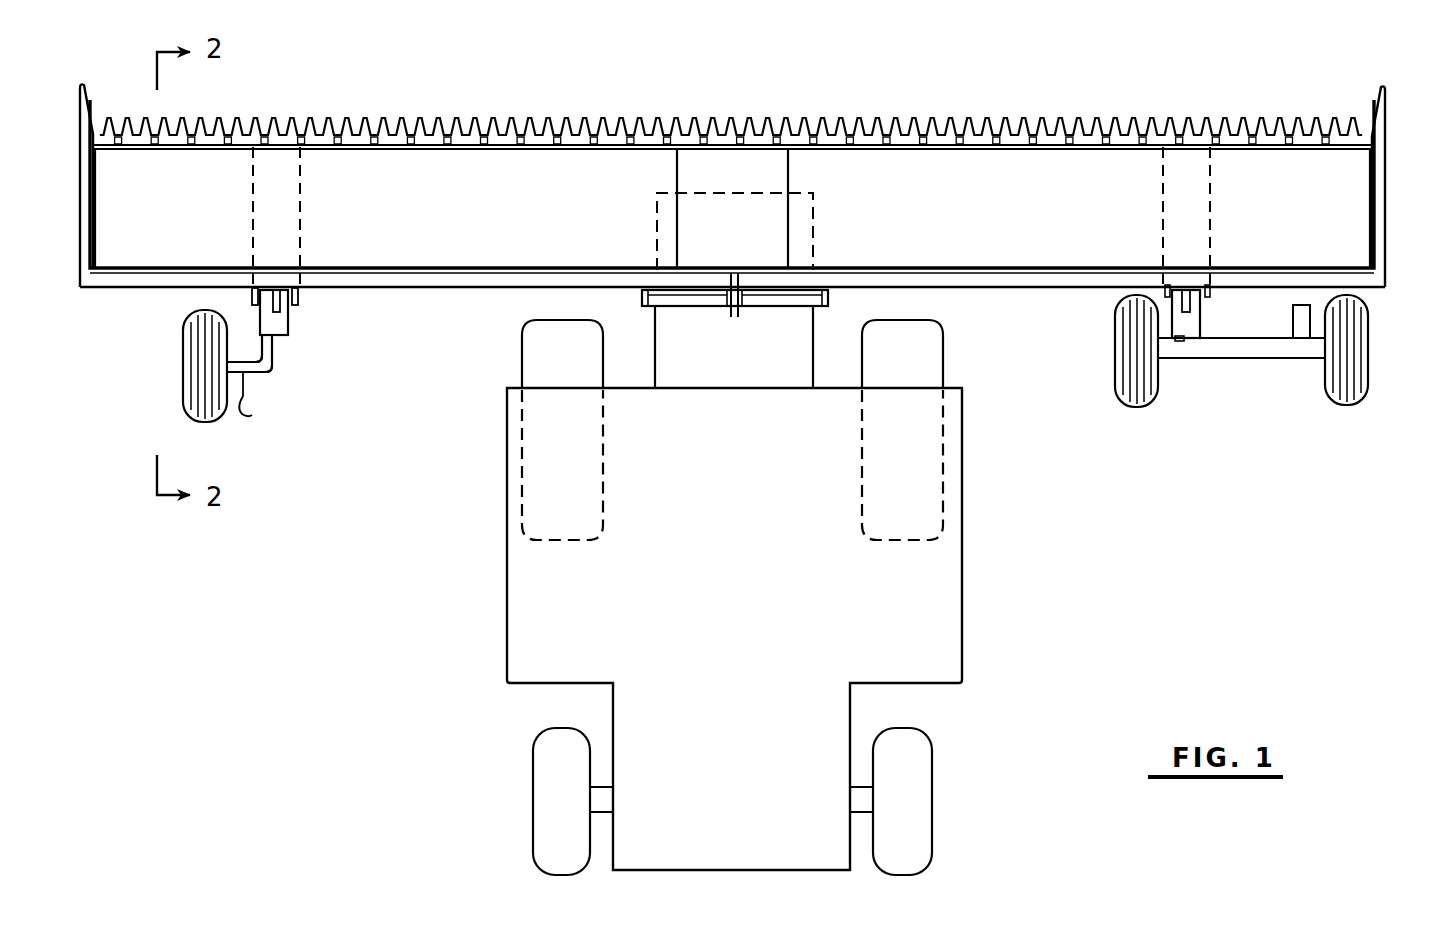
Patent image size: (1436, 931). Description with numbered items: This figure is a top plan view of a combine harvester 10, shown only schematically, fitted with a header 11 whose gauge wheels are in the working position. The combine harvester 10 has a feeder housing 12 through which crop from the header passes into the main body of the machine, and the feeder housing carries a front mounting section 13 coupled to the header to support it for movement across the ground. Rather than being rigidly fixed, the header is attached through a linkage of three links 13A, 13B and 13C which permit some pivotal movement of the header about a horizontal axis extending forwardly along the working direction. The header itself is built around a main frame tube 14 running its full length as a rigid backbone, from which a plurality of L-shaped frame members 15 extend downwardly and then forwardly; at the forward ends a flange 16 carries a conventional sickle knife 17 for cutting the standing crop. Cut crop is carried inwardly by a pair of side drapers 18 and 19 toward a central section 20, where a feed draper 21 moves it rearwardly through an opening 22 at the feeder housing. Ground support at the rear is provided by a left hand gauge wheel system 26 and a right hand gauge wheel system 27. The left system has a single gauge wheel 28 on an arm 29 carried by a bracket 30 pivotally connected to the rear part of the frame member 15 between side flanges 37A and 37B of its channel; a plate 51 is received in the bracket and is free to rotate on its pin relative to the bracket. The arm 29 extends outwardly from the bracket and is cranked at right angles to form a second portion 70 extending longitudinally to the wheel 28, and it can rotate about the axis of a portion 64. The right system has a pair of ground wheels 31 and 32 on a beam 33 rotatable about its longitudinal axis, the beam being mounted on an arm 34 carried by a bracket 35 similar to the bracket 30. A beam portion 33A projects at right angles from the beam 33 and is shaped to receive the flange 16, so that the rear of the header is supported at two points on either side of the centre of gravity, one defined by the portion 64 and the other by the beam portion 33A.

The combine harvester 10 is at (997, 598).
The header 11 is at (979, 88).
The feeder housing 12 is at (716, 368).
The front mounting section 13 is at (697, 318).
The link 13A is at (640, 297).
The link 13B is at (739, 320).
The link 13C is at (830, 297).
The main frame tube 14 is at (475, 291).
The L-shaped frame member 15 is at (262, 203).
The flange 16 is at (424, 140).
The sickle knife 17 is at (333, 116).
The side draper 18 is at (514, 167).
The side draper 19 is at (1006, 175).
The central section 20 is at (741, 172).
The feed draper 21 is at (771, 219).
The opening 22 is at (731, 270).
The left hand gauge wheel system 26 is at (254, 384).
The right hand gauge wheel system 27 is at (1211, 376).
The gauge wheel 28 is at (200, 352).
The arm 29 is at (273, 380).
The bracket 30 is at (289, 338).
The ground wheel 31 is at (1135, 320).
The ground wheel 32 is at (1348, 406).
The beam 33 is at (1270, 359).
The beam portion 33A is at (1300, 320).
The arm 34 is at (1204, 366).
The bracket 35 is at (1197, 310).
The side flange 37A is at (250, 297).
The side flange 37B is at (302, 297).
The plate 51 is at (288, 315).
The portion 64 is at (277, 358).
The second portion 70 is at (263, 403).